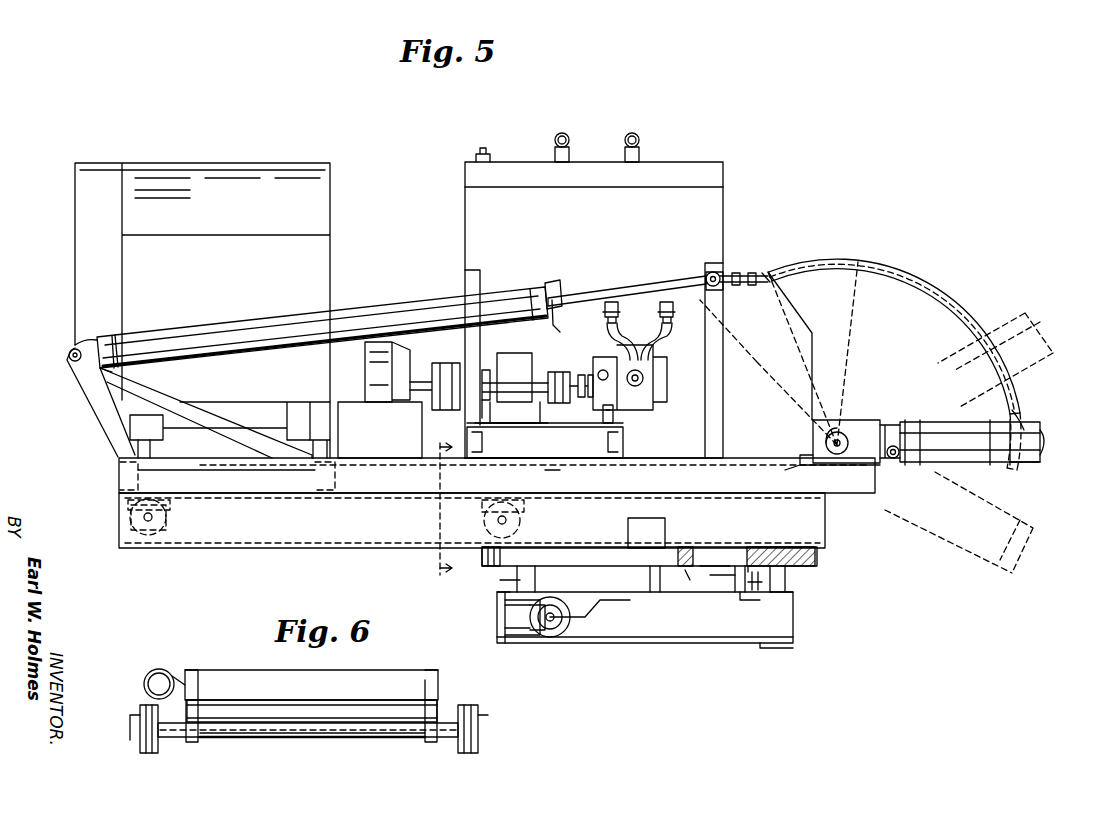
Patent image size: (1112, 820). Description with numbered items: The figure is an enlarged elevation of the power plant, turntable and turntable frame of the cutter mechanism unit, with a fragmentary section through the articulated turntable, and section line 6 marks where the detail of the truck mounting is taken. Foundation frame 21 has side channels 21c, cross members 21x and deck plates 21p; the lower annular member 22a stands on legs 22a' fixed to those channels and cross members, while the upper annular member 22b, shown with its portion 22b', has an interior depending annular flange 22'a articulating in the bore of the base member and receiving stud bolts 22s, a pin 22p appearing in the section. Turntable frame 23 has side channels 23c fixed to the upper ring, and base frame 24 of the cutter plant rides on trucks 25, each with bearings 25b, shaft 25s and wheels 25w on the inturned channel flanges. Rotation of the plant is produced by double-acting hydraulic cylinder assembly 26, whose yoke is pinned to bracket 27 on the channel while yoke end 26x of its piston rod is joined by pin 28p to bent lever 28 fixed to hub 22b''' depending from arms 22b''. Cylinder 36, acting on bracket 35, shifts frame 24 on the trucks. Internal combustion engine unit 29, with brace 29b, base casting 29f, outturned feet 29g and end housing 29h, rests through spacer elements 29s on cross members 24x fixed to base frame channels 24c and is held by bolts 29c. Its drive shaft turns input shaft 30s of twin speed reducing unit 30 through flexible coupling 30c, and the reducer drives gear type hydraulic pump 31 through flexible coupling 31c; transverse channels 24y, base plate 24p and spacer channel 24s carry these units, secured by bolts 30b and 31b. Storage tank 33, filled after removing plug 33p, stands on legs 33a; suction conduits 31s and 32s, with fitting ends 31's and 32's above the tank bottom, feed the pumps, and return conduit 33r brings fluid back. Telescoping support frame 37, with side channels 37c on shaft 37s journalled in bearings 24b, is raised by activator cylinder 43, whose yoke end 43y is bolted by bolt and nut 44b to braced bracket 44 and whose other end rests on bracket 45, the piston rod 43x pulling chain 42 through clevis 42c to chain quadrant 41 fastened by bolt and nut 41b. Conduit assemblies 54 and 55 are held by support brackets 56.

In FIG. 5, the section line 6— 6 is at (453, 503).
In FIG. 5, the foundation frame 21 is at (489, 633).
In FIG. 5, the side channels 21c is at (500, 605).
In FIG. 5, the deck plates 21p is at (755, 592).
In FIG. 5, the cross members 21x is at (765, 648).
In FIG. 5, the lower annular member 22a is at (704, 578).
In FIG. 5, the legs 22a' is at (697, 601).
In FIG. 5, the interior depending annular flange 22'a is at (484, 586).
In FIG. 5, the upper annular member 22b is at (686, 542).
In FIG. 5, the upper annular member portion 22b' is at (707, 603).
In FIG. 5, the arms 22b'' is at (712, 595).
In FIG. 5, the hub 22b''' is at (656, 595).
In FIG. 5, the turntable pin 22p is at (752, 580).
In FIG. 5, the stud bolts 22s is at (750, 602).
In FIG. 5, the turntable frame 23 is at (262, 548).
In FIG. 5, the side channels 23c is at (472, 520).
In FIG. 6, the side channels 23c is at (138, 715).
In FIG. 5, the base frame 24 is at (843, 495).
In FIG. 5, the bearings 24b is at (810, 455).
In FIG. 5, the base frame channels 24c is at (542, 476).
In FIG. 6, the base frame channels 24c is at (195, 668).
In FIG. 5, the base plate 24p is at (555, 435).
In FIG. 5, the spacer channel 24s is at (615, 418).
In FIG. 5, the cross members 24x is at (118, 478).
In FIG. 6, the cross members 24x is at (311, 696).
In FIG. 5, the transverse channels 24y is at (625, 446).
In FIG. 6, the trucks 25 is at (303, 748).
In FIG. 5, the bearings 25b is at (128, 528).
In FIG. 6, the bearings 25b is at (195, 745).
In FIG. 6, the shaft 25s is at (340, 740).
In FIG. 5, the wheels 25w is at (160, 530).
In FIG. 6, the wheels 25w is at (165, 752).
In FIG. 5, the double-acting hydraulic cylinder assembly 26 is at (540, 632).
In FIG. 5, the yoke end of piston rod 26x is at (550, 622).
In FIG. 5, the bracket 27 is at (515, 635).
In FIG. 5, the bent lever 28 is at (655, 630).
In FIG. 5, the pin 28p is at (550, 612).
In FIG. 5, the internal combustion engine unit 29 is at (202, 310).
In FIG. 5, the engine brace 29b is at (140, 425).
In FIG. 5, the bolts 29c is at (226, 474).
In FIG. 5, the base casting 29f is at (230, 421).
In FIG. 5, the outturned feet 29g is at (234, 447).
In FIG. 5, the end housing 29h is at (350, 372).
In FIG. 5, the spacer elements / drive shaft 29s is at (438, 365).
In FIG. 5, the twin speed reducing unit 30 is at (515, 388).
In FIG. 5, the bolts 30b is at (500, 444).
In FIG. 5, the flexible coupling 30c is at (460, 350).
In FIG. 5, the input shaft 30s is at (511, 411).
In FIG. 5, the gear type hydraulic pump 31 is at (650, 377).
In FIG. 5, the bolts 31b is at (593, 443).
In FIG. 5, the flexible coupling 31c is at (580, 375).
In FIG. 5, the suction conduit 31s is at (668, 345).
In FIG. 5, the pipe fitting end 31's is at (664, 288).
In FIG. 5, the suction conduit 32s is at (615, 342).
In FIG. 5, the pipe fitting end 32's is at (607, 291).
In FIG. 5, the storage tank 33 is at (594, 310).
In FIG. 5, the legs 33a is at (465, 270).
In FIG. 5, the plug 33p is at (475, 156).
In FIG. 5, the return conduit 33r is at (555, 148).
In FIG. 6, the bracket 35 is at (175, 676).
In FIG. 6, the cylinder 36 is at (148, 675).
In FIG. 5, the telescoping support frame 37 is at (985, 415).
In FIG. 5, the side channels 37c is at (1015, 420).
In FIG. 5, the shaft 37s is at (840, 430).
In FIG. 5, the chain quadrant 41 is at (876, 416).
In FIG. 5, the bolt and nut 41b is at (1015, 410).
In FIG. 5, the chain 42 is at (748, 272).
In FIG. 5, the clevis 42c is at (740, 272).
In FIG. 5, the activator cylinder 43 is at (270, 318).
In FIG. 5, the piston rod 43x is at (710, 272).
In FIG. 5, the yoke end 43y is at (70, 343).
In FIG. 5, the braced bracket 44 is at (82, 385).
In FIG. 5, the bolt and nut 44b is at (66, 355).
In FIG. 5, the bracket 45 is at (478, 316).
In FIG. 5, the telescoping conduit assembly 54 is at (1045, 458).
In FIG. 5, the telescoping conduit assembly 55 is at (1048, 438).
In FIG. 5, the support brackets 56 is at (900, 462).